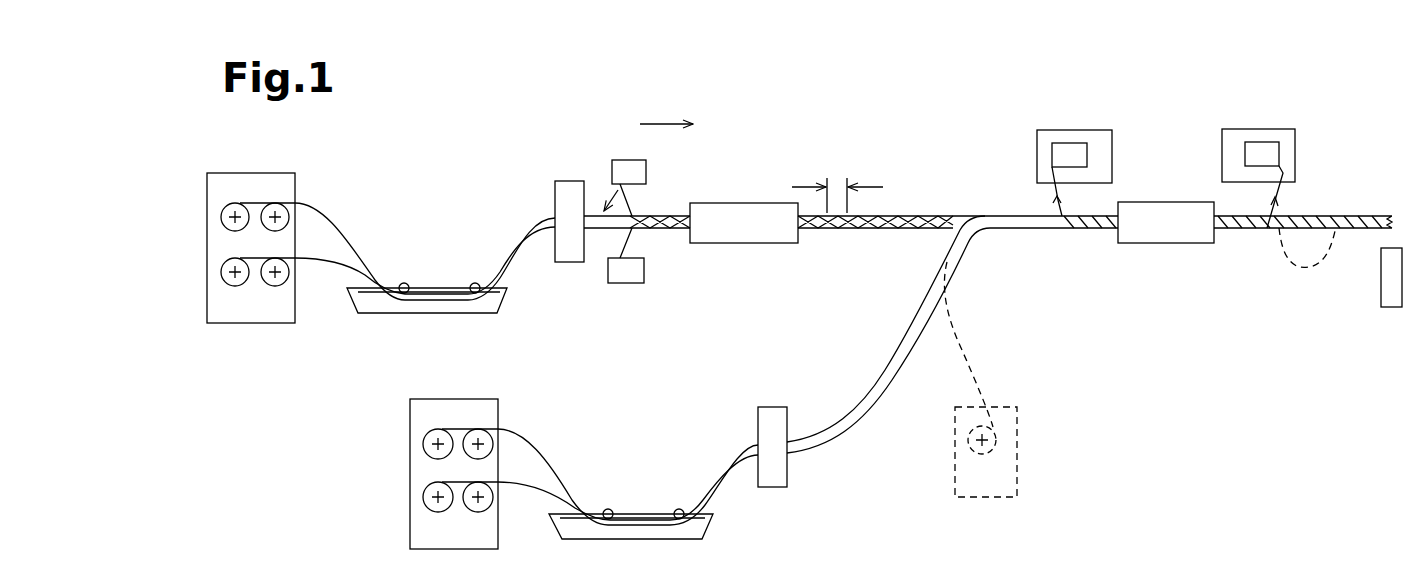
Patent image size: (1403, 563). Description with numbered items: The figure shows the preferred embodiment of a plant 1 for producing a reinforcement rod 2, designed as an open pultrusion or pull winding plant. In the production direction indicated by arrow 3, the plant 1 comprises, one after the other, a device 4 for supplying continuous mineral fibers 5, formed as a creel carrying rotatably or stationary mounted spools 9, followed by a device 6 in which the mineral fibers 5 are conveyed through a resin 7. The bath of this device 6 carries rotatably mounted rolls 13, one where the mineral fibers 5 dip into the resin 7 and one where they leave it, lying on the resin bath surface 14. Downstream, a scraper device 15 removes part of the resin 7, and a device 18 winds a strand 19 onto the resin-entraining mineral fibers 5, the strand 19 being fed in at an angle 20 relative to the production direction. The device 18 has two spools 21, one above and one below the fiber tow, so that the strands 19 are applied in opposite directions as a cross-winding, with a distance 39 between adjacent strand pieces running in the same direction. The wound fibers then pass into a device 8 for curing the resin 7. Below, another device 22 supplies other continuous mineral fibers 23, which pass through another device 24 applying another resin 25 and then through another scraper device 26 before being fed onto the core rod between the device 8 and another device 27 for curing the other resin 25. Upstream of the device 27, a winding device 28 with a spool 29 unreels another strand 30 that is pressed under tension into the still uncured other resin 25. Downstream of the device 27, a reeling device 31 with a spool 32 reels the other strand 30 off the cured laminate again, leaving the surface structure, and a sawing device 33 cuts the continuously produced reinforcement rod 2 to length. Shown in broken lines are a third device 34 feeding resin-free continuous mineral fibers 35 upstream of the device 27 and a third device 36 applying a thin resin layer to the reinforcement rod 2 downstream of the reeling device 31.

The plant 1 is at (513, 159).
The reinforcement rod 2 is at (1355, 233).
The arrow 3 is at (665, 111).
The device for supplying continuous mineral fibers 4 is at (228, 342).
The mineral fibers 5 is at (330, 213).
The device for mixing the mineral fibers with a resin 6 is at (393, 319).
The resin 7 is at (388, 306).
The device for curing the resin 8 is at (754, 200).
The spools 9 is at (235, 201).
The rotatably mounted rolls 13 is at (403, 281).
The resin bath surface 14 is at (437, 285).
The scraper device 15 is at (567, 172).
The device for winding a strand 18 is at (658, 156).
The strand 19 is at (636, 200).
The angle 20 is at (607, 195).
The spool 21 is at (623, 157).
The other device for supplying other continuous mineral fibers 22 is at (403, 434).
The other mineral fibers 23 is at (535, 446).
The other device for applying another resin 24 is at (642, 510).
The other resin 25 is at (701, 532).
The other scraper device 26 is at (781, 389).
The other device for curing the other resin 27 is at (1164, 188).
The winding device 28 is at (1025, 133).
The spool 29 is at (1093, 145).
The other strand 30 is at (1036, 191).
The reeling device 31 is at (1304, 130).
The spool 32 is at (1283, 152).
The sawing device 33 is at (1369, 305).
The third device for feeding resin-free continuous mineral fibers 34 is at (1035, 412).
The resin-free continuous mineral fibers 35 is at (968, 337).
The third device for applying a thin resin layer 36 is at (1276, 253).
The distance 39 is at (840, 178).